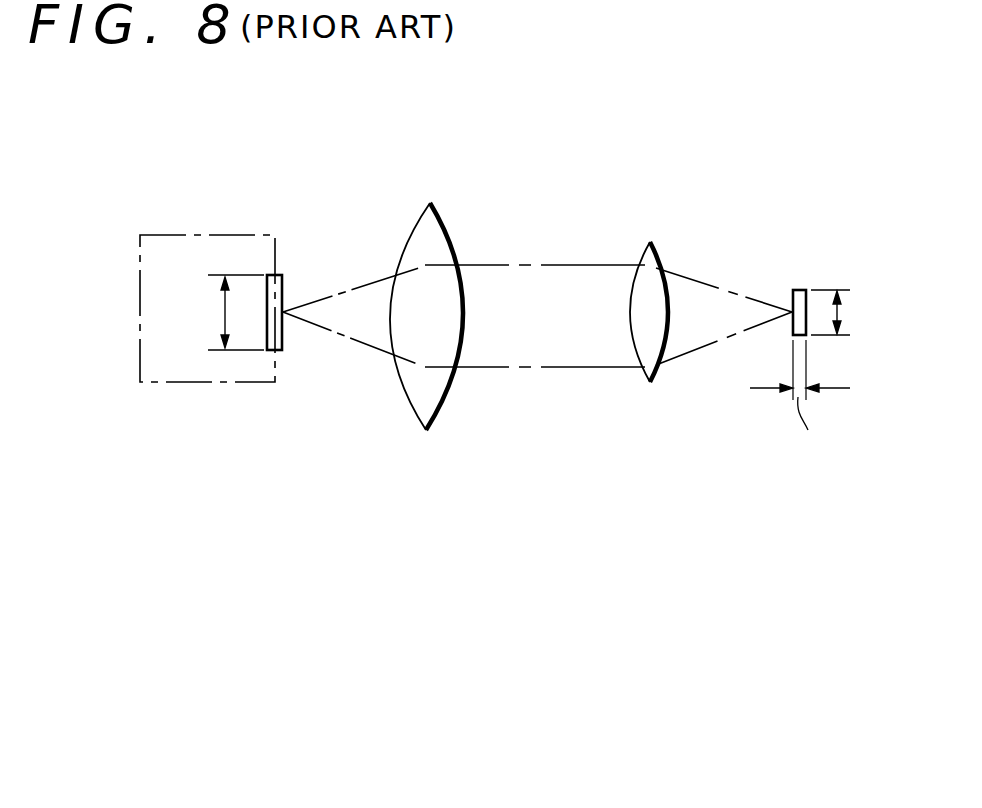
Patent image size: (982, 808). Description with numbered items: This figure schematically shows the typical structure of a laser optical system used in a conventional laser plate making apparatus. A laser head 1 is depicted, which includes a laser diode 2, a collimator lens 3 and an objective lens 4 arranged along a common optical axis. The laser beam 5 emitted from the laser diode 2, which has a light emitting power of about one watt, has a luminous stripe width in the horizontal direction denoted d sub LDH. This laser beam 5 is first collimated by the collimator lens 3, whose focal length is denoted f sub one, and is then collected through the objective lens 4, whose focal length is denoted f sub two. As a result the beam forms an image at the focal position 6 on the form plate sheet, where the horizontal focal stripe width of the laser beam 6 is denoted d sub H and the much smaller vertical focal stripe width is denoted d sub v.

The laser head 1 is at (461, 475).
The laser diode 2 is at (177, 383).
The collimator lens 3 is at (423, 432).
The objective lens 4 is at (653, 375).
The beam profile of the laser beam 5 is at (283, 345).
The focal position 6 is at (795, 290).